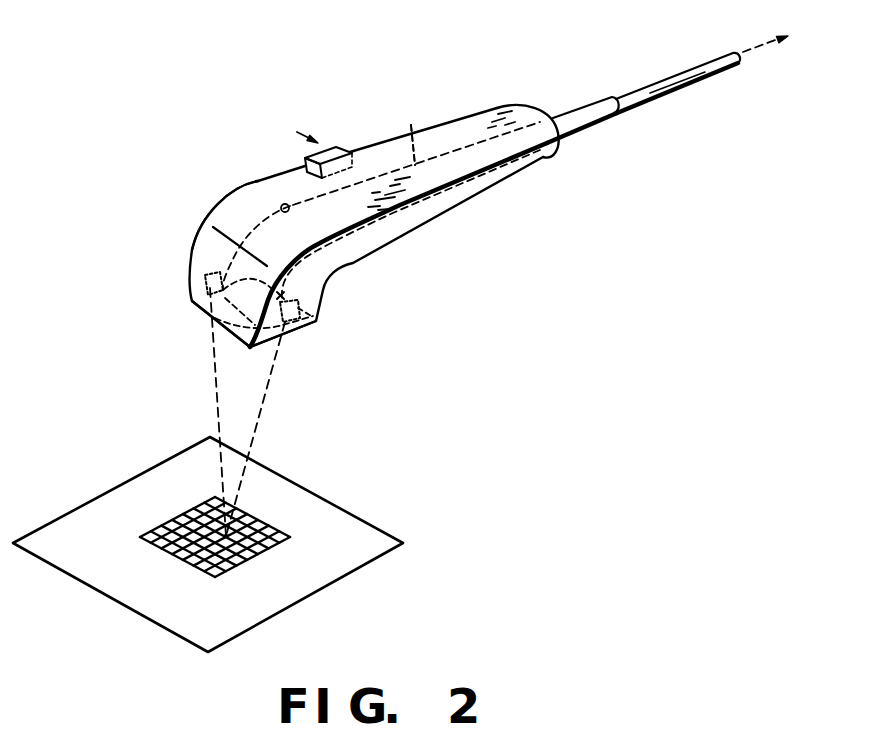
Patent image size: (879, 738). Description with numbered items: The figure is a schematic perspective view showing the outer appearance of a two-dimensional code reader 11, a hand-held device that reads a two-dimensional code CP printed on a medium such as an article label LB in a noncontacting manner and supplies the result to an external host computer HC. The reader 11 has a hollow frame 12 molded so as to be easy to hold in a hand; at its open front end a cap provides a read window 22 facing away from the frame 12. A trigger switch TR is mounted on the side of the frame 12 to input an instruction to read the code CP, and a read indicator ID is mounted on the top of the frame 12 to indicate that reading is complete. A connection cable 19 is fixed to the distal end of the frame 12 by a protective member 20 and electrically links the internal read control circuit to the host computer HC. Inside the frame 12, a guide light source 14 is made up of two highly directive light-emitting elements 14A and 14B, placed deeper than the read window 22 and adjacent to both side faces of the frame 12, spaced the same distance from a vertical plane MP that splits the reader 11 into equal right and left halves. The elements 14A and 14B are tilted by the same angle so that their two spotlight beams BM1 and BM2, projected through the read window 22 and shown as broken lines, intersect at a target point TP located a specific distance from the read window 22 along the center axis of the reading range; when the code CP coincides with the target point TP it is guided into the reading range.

The two-dimensional code reader 11 is at (524, 213).
The frame 12 is at (259, 181).
The guide light source 14 is at (191, 284).
The light-emitting element 14A is at (212, 272).
The light-emitting element 14B is at (220, 318).
The connection cable 19 is at (675, 90).
The protective member 20 is at (590, 130).
The read window 22 is at (243, 348).
The trigger switch TR is at (337, 146).
The vertical plane MP is at (420, 130).
The read indicator ID is at (281, 208).
The spotlight beam BM1 is at (215, 404).
The spotlight beam BM2 is at (258, 413).
The two-dimensional code CP is at (300, 529).
The target point TP is at (226, 537).
The article label LB is at (370, 563).
The host computer HC is at (785, 40).